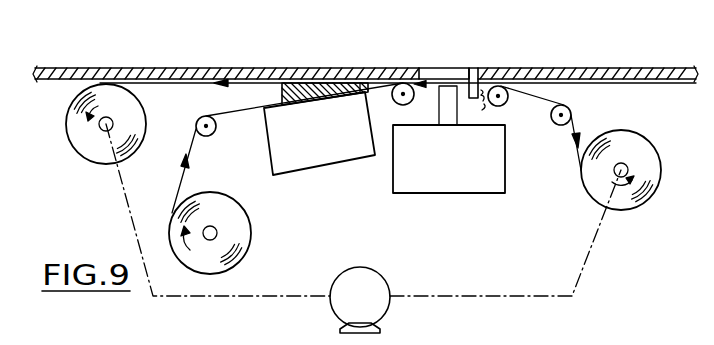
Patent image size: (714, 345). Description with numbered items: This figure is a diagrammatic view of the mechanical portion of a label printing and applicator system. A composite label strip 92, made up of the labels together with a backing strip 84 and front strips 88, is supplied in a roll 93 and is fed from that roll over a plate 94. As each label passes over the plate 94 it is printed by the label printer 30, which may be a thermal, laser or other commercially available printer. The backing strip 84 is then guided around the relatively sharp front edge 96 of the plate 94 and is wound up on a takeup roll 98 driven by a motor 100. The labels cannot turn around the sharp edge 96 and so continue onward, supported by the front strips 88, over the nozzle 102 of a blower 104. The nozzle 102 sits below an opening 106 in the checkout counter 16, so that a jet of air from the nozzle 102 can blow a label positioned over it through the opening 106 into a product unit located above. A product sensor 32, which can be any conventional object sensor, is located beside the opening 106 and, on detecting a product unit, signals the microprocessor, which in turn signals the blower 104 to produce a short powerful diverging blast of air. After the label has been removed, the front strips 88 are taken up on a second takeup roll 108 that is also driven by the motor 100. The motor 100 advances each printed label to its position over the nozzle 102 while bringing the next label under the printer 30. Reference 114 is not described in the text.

The checkout counter 16 is at (333, 68).
The label printer 30 is at (330, 165).
The product sensor 32 is at (463, 68).
The backing strip 84 is at (163, 84).
The front strips 88 is at (430, 87).
The composite label strip 92 is at (195, 138).
The roll 93 is at (251, 229).
The plate 94 is at (300, 82).
The front edge 96 is at (368, 82).
The takeup roll 98 is at (90, 162).
The motor 100 is at (358, 270).
The nozzle 102 is at (452, 95).
The blower 104 is at (452, 193).
The opening 106 is at (431, 69).
The takeup roll 108 is at (640, 193).
The conveyor 114 is at (660, 343).